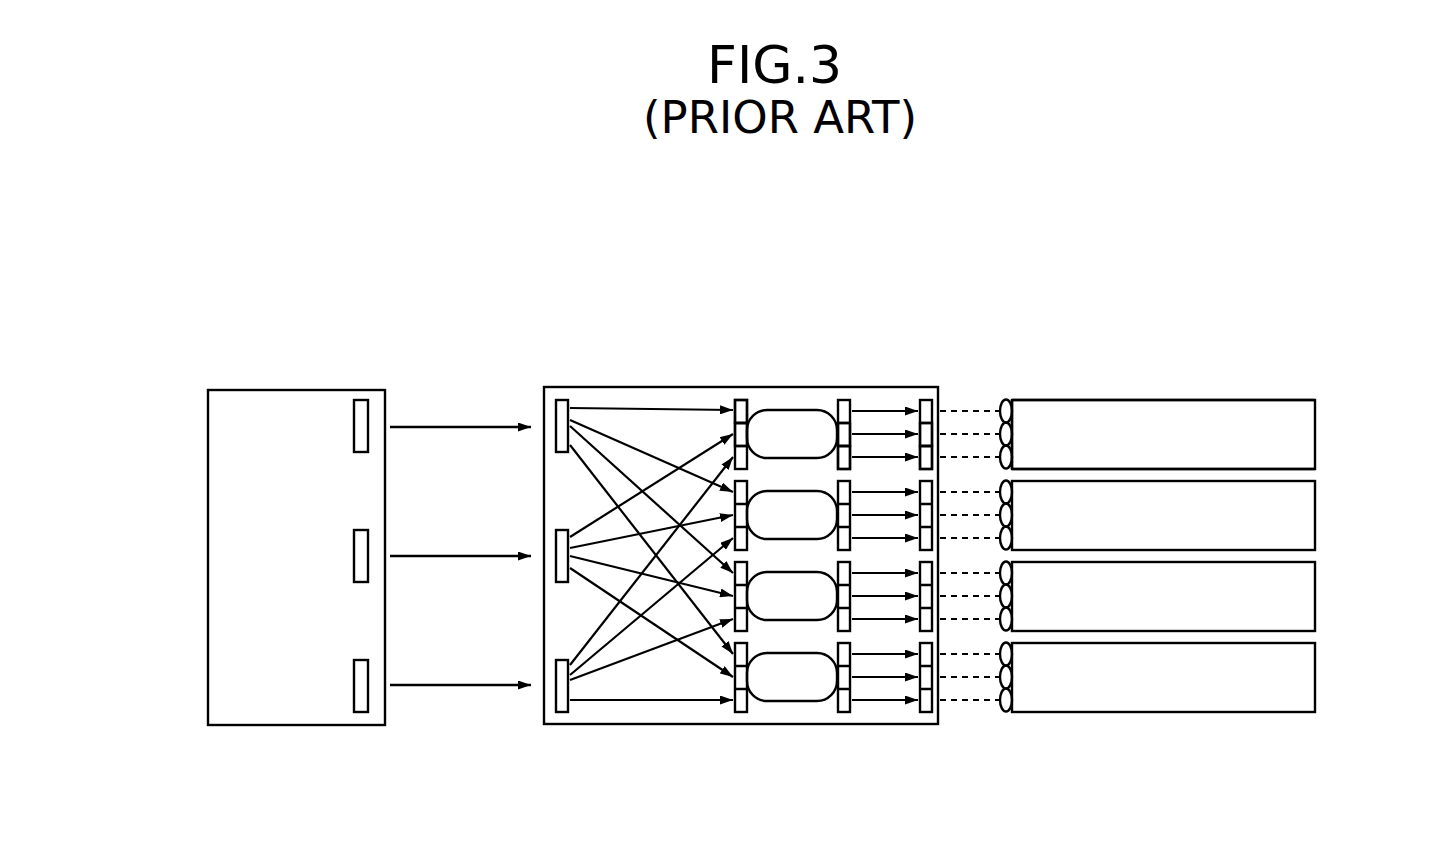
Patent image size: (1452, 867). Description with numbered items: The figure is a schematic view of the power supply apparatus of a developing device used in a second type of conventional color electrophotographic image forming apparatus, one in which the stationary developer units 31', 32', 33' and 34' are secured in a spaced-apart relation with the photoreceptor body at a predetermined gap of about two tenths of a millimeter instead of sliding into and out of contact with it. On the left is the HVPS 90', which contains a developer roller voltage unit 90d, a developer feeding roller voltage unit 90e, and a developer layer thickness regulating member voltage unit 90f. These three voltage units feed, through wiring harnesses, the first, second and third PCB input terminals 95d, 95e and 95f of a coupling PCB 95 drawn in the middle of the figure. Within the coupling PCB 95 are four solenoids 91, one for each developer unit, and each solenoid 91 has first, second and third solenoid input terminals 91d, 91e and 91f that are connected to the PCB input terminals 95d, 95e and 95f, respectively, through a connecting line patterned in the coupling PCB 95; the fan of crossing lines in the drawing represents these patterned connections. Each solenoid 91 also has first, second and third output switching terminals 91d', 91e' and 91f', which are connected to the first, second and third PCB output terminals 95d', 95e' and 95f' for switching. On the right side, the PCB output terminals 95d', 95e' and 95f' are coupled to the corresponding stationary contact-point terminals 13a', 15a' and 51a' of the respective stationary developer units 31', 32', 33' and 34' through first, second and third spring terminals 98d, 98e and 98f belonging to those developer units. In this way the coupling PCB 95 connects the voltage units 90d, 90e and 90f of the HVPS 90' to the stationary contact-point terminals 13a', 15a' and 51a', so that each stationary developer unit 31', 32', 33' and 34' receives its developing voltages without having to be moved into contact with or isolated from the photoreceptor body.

The HVPS 90' is at (234, 557).
The developer roller voltage unit 90d is at (370, 412).
The developer feeding roller voltage unit 90e is at (370, 545).
The developer layer thickness regulating member voltage unit 90f is at (370, 675).
The coupling printed circuit board 95 is at (668, 724).
The first PCB input terminal 95d is at (492, 436).
The second PCB input terminal 95e is at (495, 566).
The third PCB input terminal 95f is at (498, 694).
The solenoid 91 is at (785, 410).
The first solenoid input terminal 91d is at (733, 380).
The second solenoid input terminal 91e is at (692, 378).
The third solenoid input terminal 91f is at (684, 430).
The first output switching terminal 91d' is at (852, 380).
The second output switching terminal 91e' is at (875, 388).
The third output switching terminal 91f' is at (801, 470).
The first PCB output terminal 95d' is at (927, 374).
The second PCB output terminal 95e' is at (954, 380).
The third PCB output terminal 95f' is at (892, 470).
The first spring terminal 98d is at (997, 410).
The second spring terminal 98e is at (1003, 430).
The third spring terminal 98f is at (1015, 460).
The stationary contact-point terminal 13a' is at (1163, 362).
The stationary contact-point terminal 15a' is at (1068, 409).
The stationary contact-point terminal 51a' is at (1163, 435).
The stationary developer unit 31' is at (1222, 434).
The stationary developer unit 32' is at (1222, 515).
The stationary developer unit 33' is at (1222, 596).
The stationary developer unit 34' is at (1222, 677).